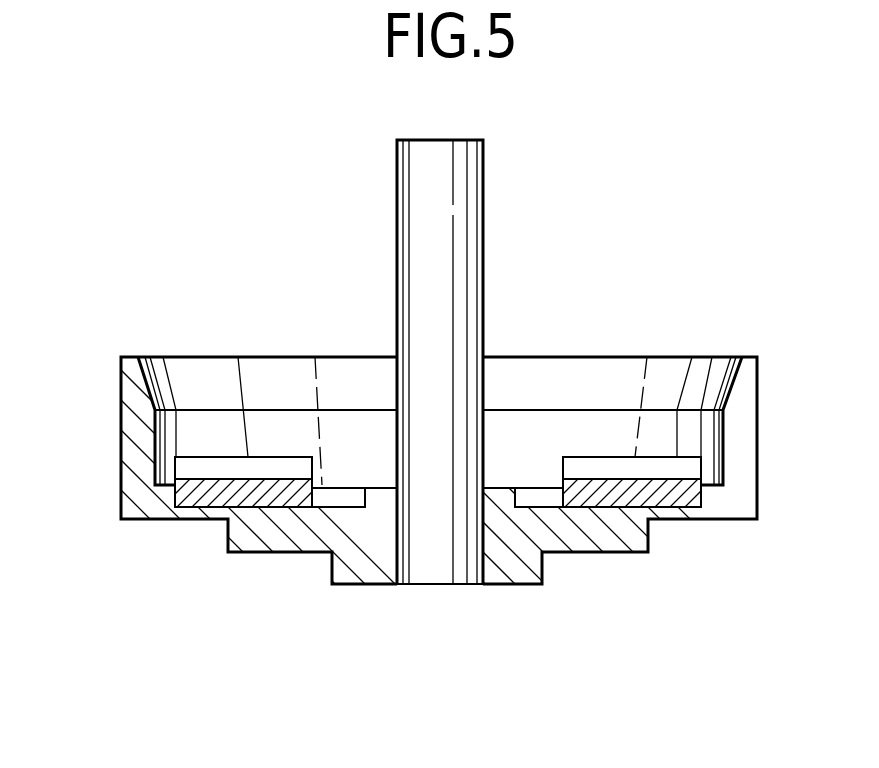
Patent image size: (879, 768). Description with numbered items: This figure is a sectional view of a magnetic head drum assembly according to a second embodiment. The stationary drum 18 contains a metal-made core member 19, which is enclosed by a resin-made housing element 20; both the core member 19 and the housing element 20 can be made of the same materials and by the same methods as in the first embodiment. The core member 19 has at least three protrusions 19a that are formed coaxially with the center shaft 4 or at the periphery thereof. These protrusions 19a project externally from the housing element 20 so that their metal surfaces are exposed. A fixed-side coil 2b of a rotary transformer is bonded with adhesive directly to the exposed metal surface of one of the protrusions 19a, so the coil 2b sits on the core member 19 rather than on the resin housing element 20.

The center shaft 4 is at (465, 283).
The stationary drum 18 is at (258, 346).
The fixed-side coil 2b is at (203, 465).
The core member 19 is at (200, 508).
The protrusions 19a is at (268, 480).
The housing element 20 is at (128, 445).